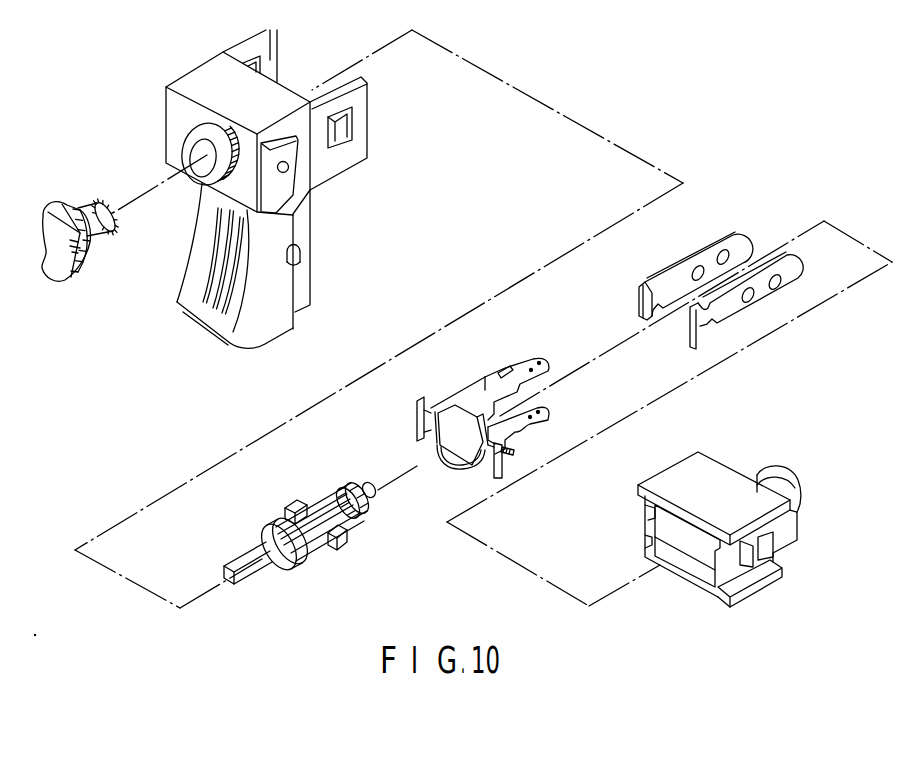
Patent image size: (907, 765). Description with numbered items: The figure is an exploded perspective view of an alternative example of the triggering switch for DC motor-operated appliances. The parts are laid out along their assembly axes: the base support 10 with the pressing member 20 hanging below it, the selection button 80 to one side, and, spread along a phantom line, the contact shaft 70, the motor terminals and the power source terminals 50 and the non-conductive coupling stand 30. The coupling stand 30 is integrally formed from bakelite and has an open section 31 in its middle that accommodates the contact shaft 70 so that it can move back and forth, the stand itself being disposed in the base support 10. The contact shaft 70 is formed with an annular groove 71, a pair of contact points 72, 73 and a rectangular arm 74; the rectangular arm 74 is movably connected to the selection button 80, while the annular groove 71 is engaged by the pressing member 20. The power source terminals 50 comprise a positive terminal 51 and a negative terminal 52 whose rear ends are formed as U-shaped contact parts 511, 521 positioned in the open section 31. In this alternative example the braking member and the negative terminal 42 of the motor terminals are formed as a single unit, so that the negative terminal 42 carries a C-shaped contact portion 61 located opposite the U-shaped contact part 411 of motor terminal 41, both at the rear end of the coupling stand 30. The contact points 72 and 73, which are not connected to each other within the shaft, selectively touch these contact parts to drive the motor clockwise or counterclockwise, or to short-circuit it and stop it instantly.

The base support 10 is at (303, 279).
The pressing member 20 is at (263, 337).
The selection button 80 is at (79, 262).
The contact shaft 70 is at (307, 526).
The annular groove 71 is at (300, 567).
The contact point 72 is at (296, 498).
The contact point 73 is at (344, 541).
The rectangular arm 74 is at (253, 565).
The C-shaped contact portion 61 is at (451, 482).
The U-shaped contact part 411 is at (457, 468).
The negative terminal 42 is at (484, 381).
The motor terminal 41 is at (533, 427).
The power source terminals 50 is at (745, 286).
The positive terminal 51 is at (686, 251).
The U-shaped contact part 511 is at (645, 303).
The negative terminal 52 is at (760, 321).
The U-shaped contact part 521 is at (700, 332).
The non-conductive coupling stand 30 is at (719, 518).
The open section 31 is at (696, 556).